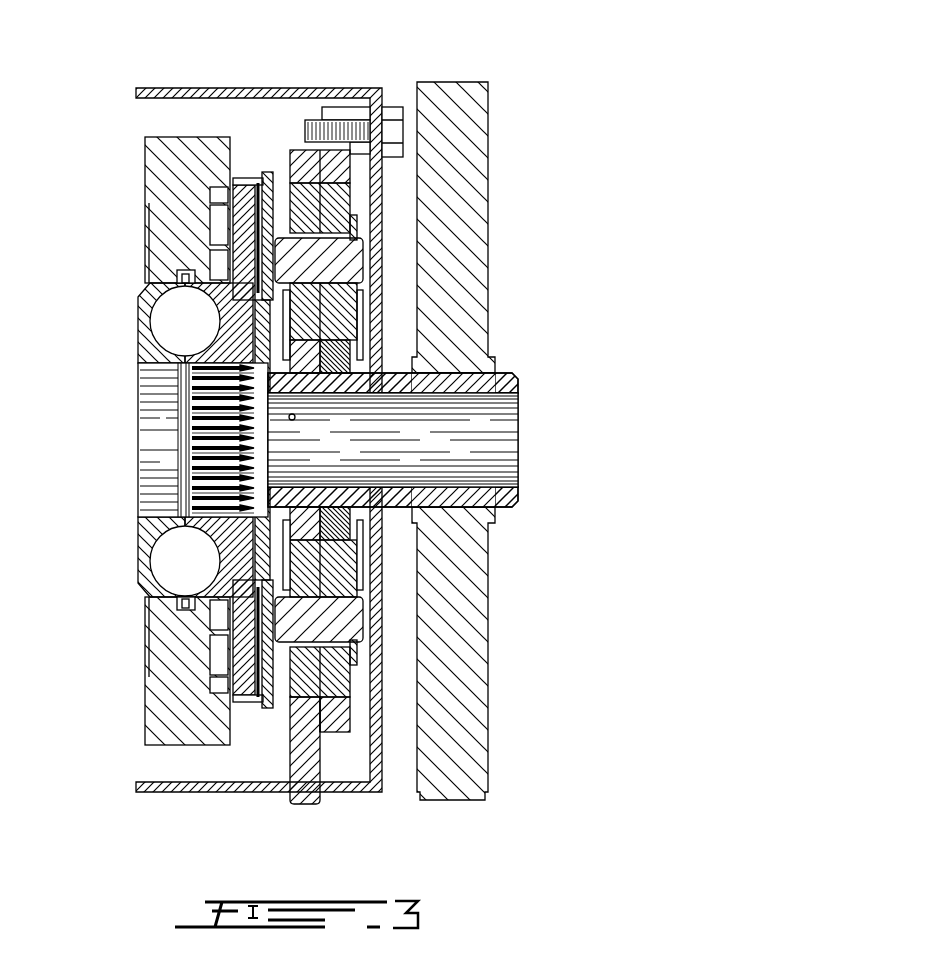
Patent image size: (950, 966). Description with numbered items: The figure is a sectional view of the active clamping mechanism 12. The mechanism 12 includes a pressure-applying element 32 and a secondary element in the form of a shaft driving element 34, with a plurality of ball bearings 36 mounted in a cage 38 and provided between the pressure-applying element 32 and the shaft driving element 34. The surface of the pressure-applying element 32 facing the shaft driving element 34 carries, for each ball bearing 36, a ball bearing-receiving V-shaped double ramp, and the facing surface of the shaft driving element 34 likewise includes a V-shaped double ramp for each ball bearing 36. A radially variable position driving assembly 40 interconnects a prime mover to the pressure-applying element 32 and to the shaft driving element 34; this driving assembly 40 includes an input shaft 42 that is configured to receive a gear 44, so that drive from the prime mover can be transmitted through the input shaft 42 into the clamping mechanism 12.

The active clamping mechanism 12 is at (556, 150).
The pressure-applying element 32 is at (192, 165).
The shaft driving element 34 is at (233, 195).
The ball bearings 36 is at (180, 322).
The cage 38 is at (185, 276).
The radially variable position driving assembly 40 is at (264, 740).
The input shaft 42 is at (518, 382).
The gear 44 is at (462, 739).